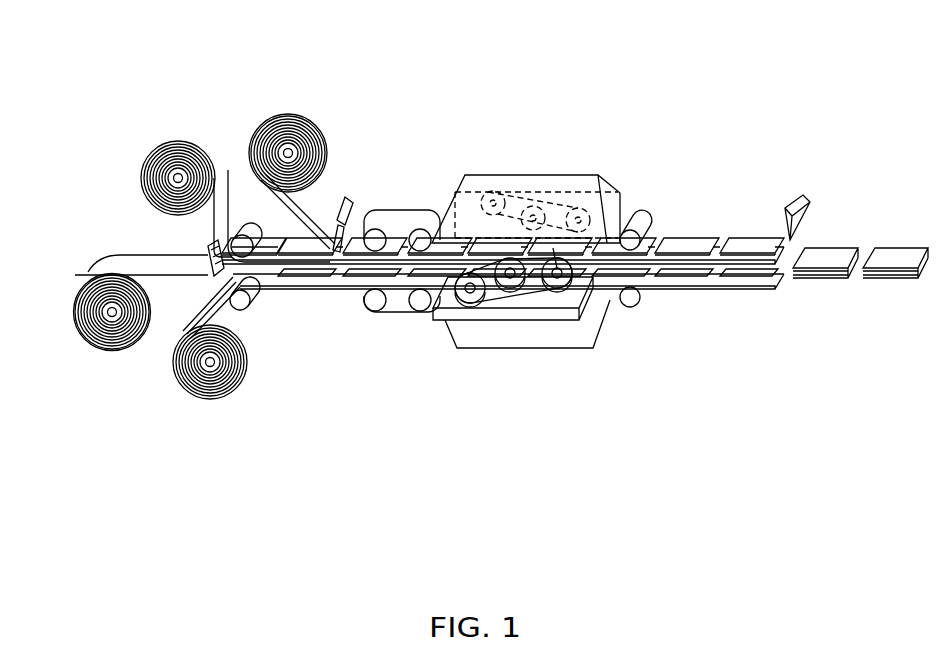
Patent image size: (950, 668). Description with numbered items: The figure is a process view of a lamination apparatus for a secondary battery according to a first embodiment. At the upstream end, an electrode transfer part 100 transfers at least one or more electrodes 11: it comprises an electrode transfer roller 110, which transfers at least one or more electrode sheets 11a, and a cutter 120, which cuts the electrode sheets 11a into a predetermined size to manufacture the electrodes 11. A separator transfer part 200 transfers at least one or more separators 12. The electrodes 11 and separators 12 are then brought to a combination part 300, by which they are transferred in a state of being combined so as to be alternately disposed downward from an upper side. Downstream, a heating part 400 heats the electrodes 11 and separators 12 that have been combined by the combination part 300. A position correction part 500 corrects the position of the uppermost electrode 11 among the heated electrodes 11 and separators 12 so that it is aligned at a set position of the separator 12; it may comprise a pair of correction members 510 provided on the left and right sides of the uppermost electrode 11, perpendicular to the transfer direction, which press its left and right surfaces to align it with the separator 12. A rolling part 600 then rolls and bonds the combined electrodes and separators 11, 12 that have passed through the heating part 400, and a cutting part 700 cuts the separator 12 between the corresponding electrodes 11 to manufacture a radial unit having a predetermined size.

The electrode transfer part 100 is at (333, 41).
The electrode transfer roller 110 is at (288, 148).
The cutter 120 is at (345, 198).
The separator transfer part 200 is at (178, 173).
The electrode sheet 11a is at (258, 140).
The electrode 11 is at (348, 262).
The separator 12 is at (282, 287).
The combination part 300 is at (398, 297).
The heating part 400 is at (528, 187).
The position correction part 500 is at (521, 349).
The correction member 510 is at (518, 283).
The rolling part 600 is at (635, 230).
The cutting part 700 is at (798, 203).